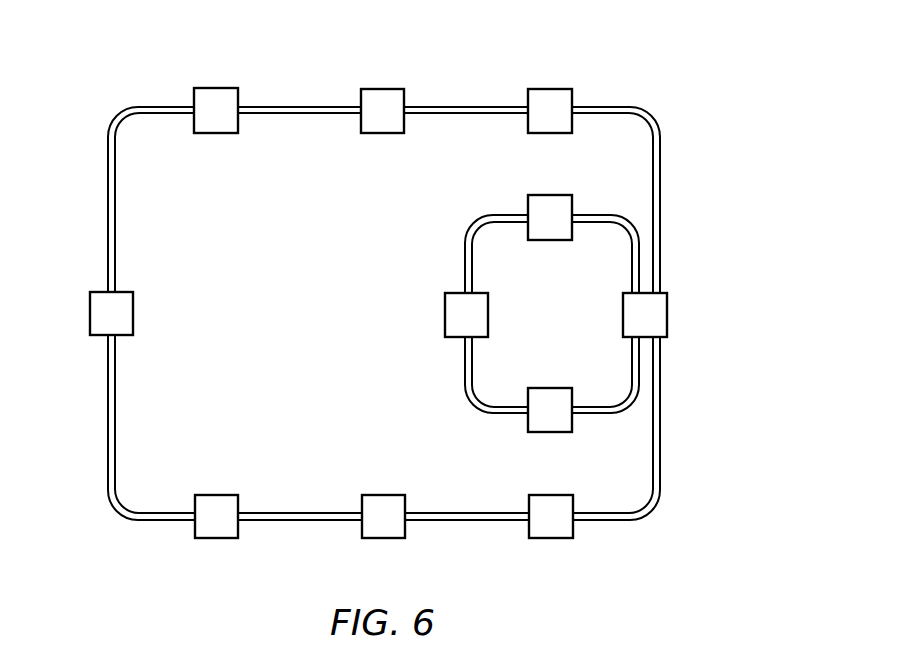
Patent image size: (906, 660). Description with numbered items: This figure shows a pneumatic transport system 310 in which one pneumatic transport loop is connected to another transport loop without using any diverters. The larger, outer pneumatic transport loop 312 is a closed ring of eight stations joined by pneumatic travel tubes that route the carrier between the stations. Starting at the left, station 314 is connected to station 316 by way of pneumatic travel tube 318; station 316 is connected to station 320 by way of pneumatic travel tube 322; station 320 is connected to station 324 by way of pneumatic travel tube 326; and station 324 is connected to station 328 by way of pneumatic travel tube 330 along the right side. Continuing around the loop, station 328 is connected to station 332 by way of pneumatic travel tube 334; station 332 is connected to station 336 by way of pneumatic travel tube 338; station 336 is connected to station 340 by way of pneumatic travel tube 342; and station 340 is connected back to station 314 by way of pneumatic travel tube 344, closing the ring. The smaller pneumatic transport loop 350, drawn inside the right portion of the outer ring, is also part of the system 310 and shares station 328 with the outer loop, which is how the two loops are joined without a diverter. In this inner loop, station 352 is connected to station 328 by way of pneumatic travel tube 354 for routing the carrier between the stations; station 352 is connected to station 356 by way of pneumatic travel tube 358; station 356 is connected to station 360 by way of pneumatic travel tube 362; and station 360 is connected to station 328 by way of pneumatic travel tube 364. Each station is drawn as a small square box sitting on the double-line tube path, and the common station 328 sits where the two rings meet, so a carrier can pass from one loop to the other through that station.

The transport system 310 is at (386, 295).
The pneumatic transport loop 312 is at (308, 328).
The station 314 is at (90, 306).
The station 316 is at (212, 88).
The pneumatic travel tube 318 is at (108, 203).
The station 320 is at (380, 89).
The pneumatic travel tube 322 is at (283, 107).
The station 324 is at (560, 89).
The pneumatic travel tube 326 is at (467, 107).
The station 328 is at (667, 311).
The pneumatic travel tube 330 is at (661, 208).
The station 332 is at (552, 538).
The pneumatic travel tube 334 is at (660, 418).
The station 336 is at (382, 538).
The pneumatic travel tube 338 is at (467, 520).
The station 340 is at (216, 538).
The pneumatic travel tube 342 is at (283, 520).
The pneumatic travel tube 344 is at (108, 415).
The pneumatic transport loop 350 is at (512, 283).
The station 352 is at (555, 432).
The pneumatic travel tube 354 is at (632, 368).
The station 356 is at (445, 308).
The pneumatic travel tube 358 is at (465, 367).
The station 360 is at (556, 195).
The pneumatic travel tube 362 is at (463, 260).
The pneumatic travel tube 364 is at (632, 262).